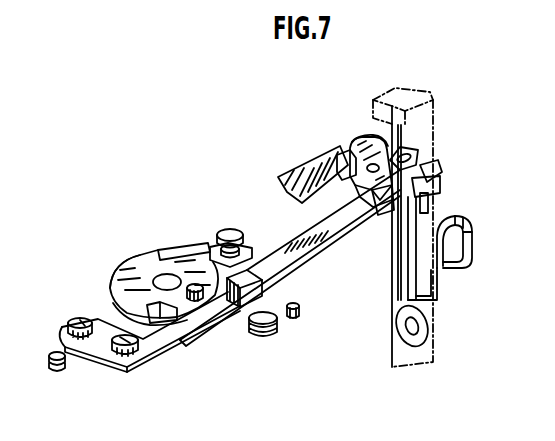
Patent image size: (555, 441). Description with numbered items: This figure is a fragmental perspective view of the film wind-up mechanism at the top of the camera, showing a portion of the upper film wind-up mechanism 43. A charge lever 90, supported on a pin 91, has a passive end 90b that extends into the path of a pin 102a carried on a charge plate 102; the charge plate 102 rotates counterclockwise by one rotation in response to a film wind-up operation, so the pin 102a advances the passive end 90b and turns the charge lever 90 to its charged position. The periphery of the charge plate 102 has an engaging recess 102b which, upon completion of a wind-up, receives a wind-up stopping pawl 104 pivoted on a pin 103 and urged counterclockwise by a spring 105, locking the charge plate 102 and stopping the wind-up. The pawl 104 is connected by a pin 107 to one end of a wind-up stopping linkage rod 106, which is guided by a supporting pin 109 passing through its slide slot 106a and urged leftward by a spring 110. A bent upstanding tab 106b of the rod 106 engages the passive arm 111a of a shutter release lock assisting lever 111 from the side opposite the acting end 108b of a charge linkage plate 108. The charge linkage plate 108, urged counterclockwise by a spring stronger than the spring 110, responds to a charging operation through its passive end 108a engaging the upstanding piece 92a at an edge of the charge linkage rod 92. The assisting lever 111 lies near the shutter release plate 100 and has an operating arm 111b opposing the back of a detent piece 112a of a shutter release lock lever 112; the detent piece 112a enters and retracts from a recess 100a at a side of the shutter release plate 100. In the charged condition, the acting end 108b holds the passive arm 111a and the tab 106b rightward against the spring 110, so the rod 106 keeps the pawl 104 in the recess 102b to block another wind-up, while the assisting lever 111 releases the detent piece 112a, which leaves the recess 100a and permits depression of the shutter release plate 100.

The upper film wind-up mechanism 43 is at (115, 262).
The charge lever 90 is at (232, 245).
The passive end of charge lever 90b is at (178, 250).
The pin 91 is at (232, 232).
The charge linkage rod 92 is at (292, 197).
The upstanding piece 92a is at (340, 158).
The shutter release plate 100 is at (433, 112).
The recess 100a is at (397, 263).
The charge plate 102 is at (130, 268).
The pin 102a is at (198, 302).
The engaging recess 102b is at (163, 302).
The pin 103 is at (78, 321).
The wind-up stopping pawl 104 is at (105, 348).
The spring 105 is at (66, 352).
The wind-up stopping linkage rod 106 is at (298, 258).
The slide slot 106a is at (413, 152).
The upstanding tab 106b is at (437, 170).
The pin 107 is at (138, 352).
The charge linkage plate 108 is at (337, 157).
The passive end of charge linkage plate 108a is at (358, 140).
The acting end of charge linkage plate 108b is at (432, 190).
The supporting pin 109 is at (377, 213).
The spring 110 is at (270, 342).
The shutter release lock assisting lever 111 is at (397, 302).
The passive arm 111a is at (422, 205).
The operating arm 111b is at (473, 255).
The shutter release lock lever 112 is at (447, 267).
The detent piece 112a is at (473, 232).